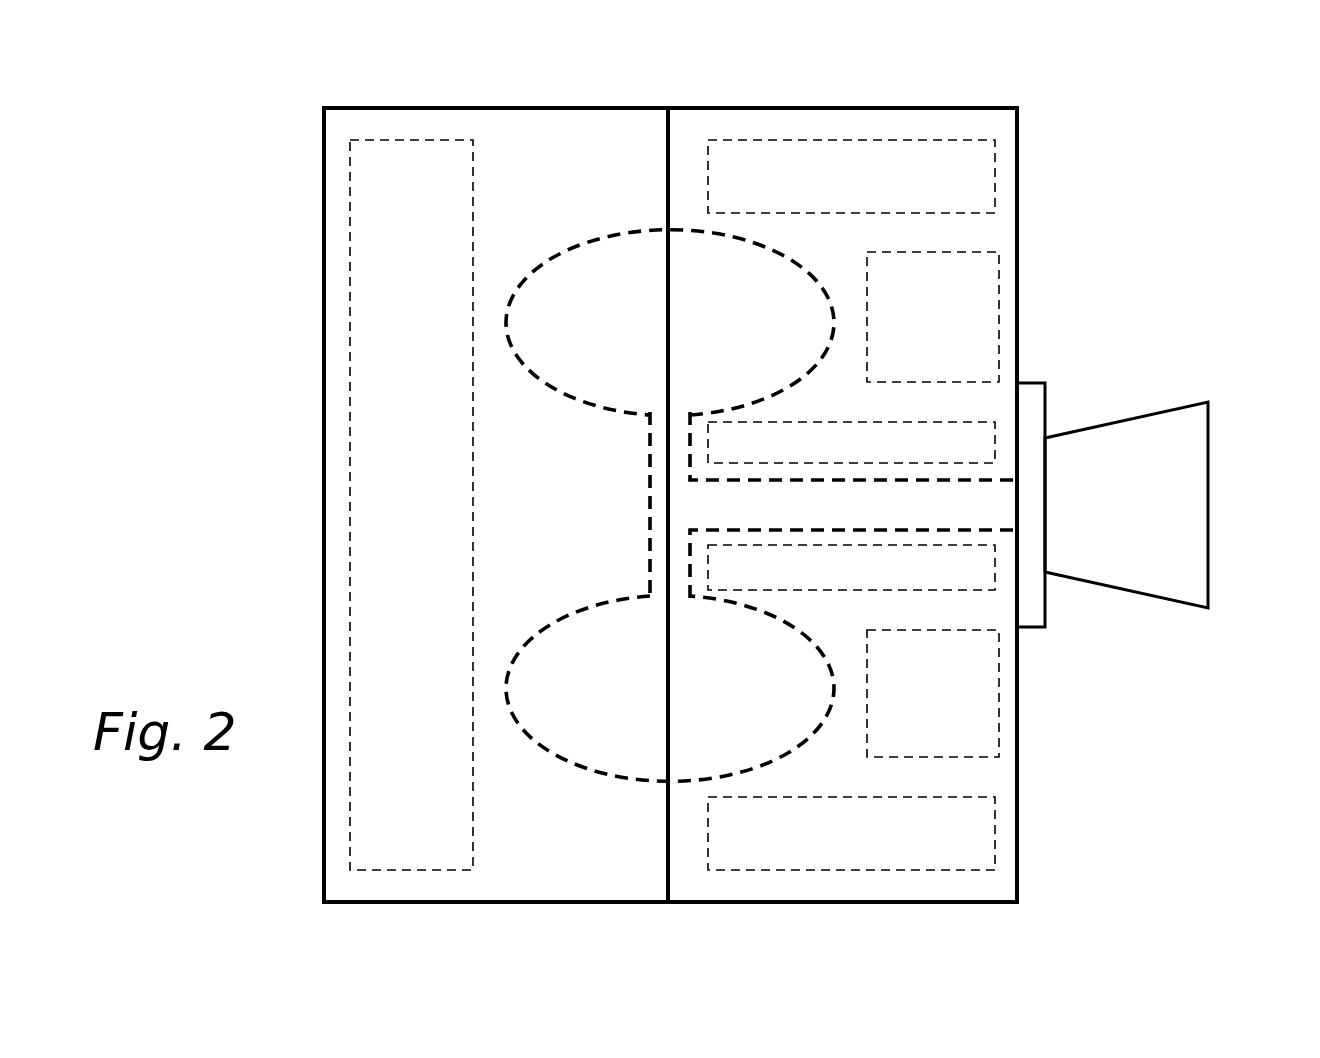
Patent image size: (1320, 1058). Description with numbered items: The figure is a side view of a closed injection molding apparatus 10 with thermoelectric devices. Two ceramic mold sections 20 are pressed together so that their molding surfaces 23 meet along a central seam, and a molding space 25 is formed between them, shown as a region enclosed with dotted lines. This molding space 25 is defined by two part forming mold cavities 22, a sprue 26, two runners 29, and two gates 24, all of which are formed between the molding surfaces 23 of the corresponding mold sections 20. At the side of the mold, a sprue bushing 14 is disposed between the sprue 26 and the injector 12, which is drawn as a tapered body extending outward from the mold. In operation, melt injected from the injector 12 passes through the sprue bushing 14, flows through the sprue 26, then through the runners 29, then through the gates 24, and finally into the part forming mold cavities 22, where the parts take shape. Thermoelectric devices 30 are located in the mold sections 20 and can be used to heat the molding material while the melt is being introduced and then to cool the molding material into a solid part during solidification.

The injection molding apparatus 10 is at (1188, 190).
The injector 12 is at (1172, 440).
The sprue bushing 14 is at (1035, 413).
The ceramic mold sections 20 is at (565, 903).
The part forming mold cavities 22 is at (728, 305).
The molding surfaces 23 is at (668, 173).
The gates 24 is at (658, 418).
The molding space 25 is at (558, 250).
The sprue 26 is at (940, 513).
The runners 29 is at (652, 555).
The thermoelectric devices 30 is at (975, 300).